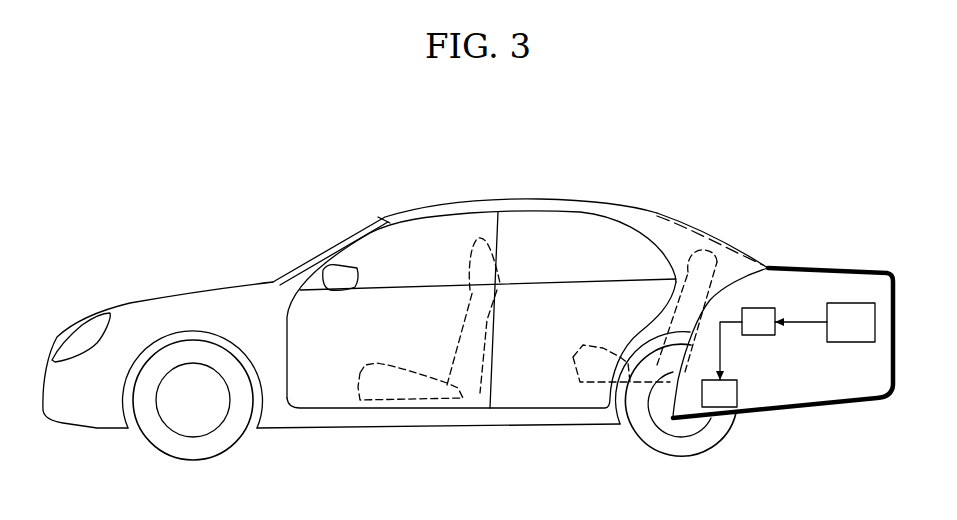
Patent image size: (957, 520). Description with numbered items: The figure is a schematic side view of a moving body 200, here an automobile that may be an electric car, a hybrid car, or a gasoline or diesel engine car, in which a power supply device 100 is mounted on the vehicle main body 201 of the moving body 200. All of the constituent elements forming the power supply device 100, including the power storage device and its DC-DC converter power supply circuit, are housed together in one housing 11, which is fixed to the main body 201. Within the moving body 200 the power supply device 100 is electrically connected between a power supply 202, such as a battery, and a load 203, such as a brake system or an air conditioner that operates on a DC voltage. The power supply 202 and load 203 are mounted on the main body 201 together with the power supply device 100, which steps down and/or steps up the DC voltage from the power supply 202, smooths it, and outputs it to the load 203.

The power supply device 100 is at (768, 286).
The housing 11 is at (768, 314).
The moving body 200 is at (714, 219).
The main body 201 is at (577, 200).
The power supply 202 is at (852, 334).
The load 203 is at (726, 396).